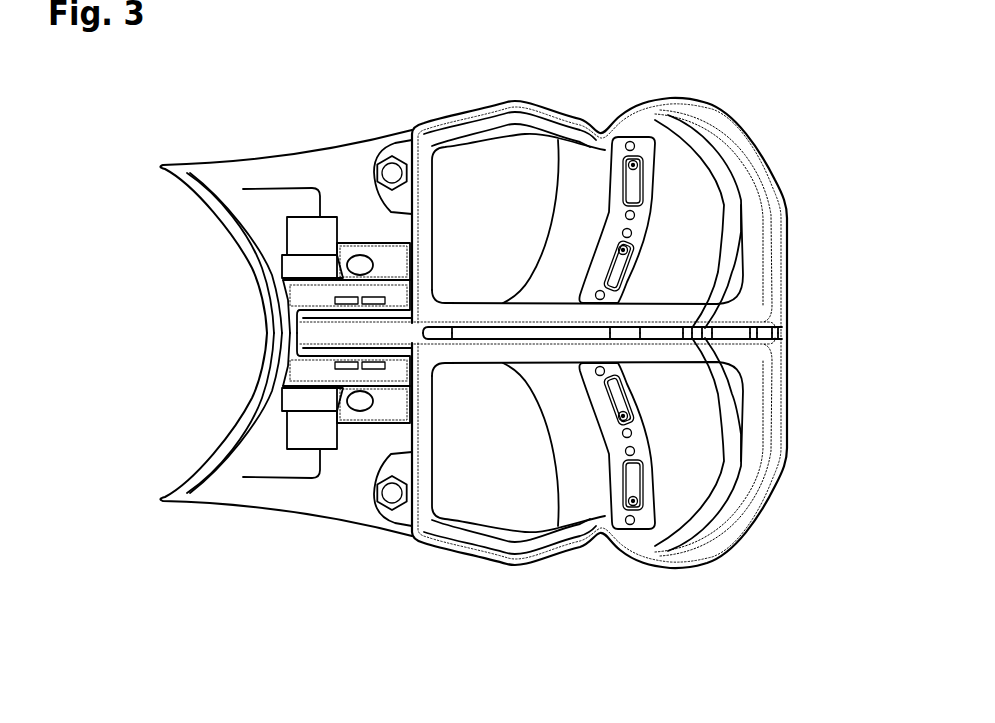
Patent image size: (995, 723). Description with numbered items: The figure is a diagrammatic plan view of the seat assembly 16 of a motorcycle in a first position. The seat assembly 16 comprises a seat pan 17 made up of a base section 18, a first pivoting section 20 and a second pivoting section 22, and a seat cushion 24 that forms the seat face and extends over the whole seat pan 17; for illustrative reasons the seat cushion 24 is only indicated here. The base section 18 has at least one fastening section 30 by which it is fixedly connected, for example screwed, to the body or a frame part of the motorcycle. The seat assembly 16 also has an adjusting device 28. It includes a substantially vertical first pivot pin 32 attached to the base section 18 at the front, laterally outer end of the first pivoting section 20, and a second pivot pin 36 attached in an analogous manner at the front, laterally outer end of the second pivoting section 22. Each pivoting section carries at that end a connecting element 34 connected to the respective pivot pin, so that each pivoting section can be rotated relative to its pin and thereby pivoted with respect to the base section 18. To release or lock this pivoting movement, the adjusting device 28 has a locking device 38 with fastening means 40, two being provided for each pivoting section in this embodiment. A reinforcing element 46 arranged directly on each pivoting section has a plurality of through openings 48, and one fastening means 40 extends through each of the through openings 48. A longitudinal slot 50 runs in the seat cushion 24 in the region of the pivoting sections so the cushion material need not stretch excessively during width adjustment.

The seat assembly 16 is at (242, 138).
The seat pan 17 is at (238, 522).
The base section 18 is at (223, 480).
The first pivoting section 20 is at (708, 417).
The second pivoting section 22 is at (700, 189).
The seat cushion 24 is at (748, 273).
The adjusting device 28 is at (418, 170).
The fastening section 30 is at (358, 262).
The first pivot pin 32 is at (388, 516).
The connecting element 34 is at (394, 160).
The second pivot pin 36 is at (368, 242).
The locking device 38 is at (633, 122).
The fastening means 40 is at (638, 166).
The reinforcing element 46 is at (625, 213).
The through openings 48 is at (638, 492).
The longitudinal slot 50 is at (408, 334).